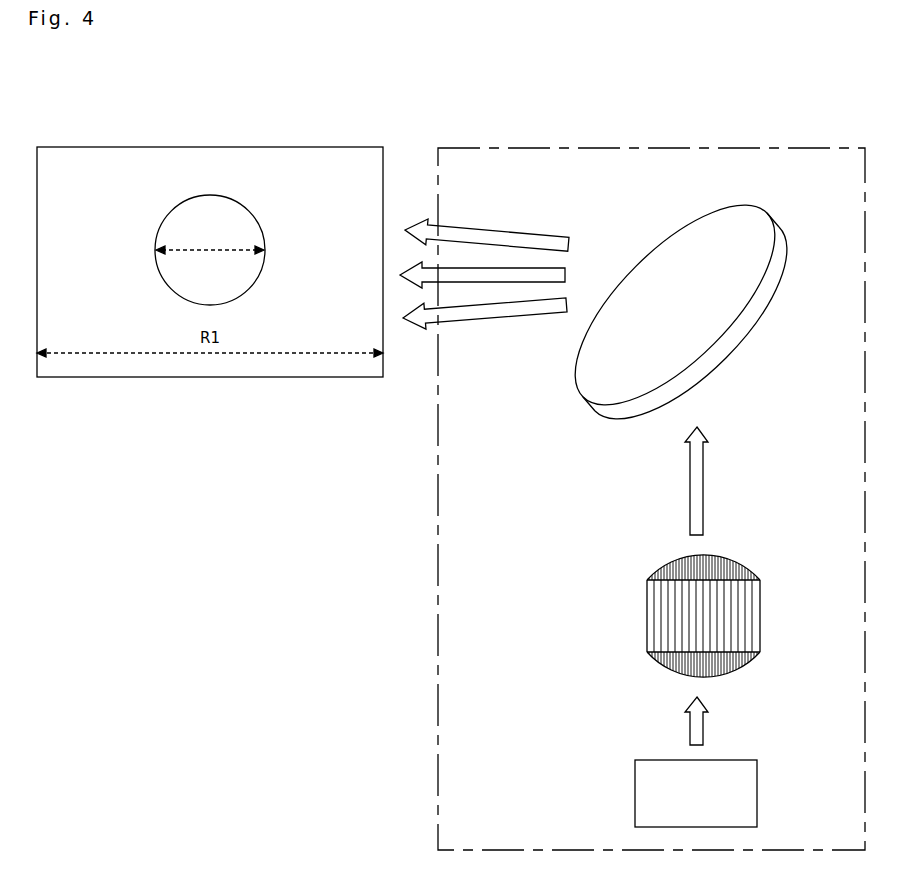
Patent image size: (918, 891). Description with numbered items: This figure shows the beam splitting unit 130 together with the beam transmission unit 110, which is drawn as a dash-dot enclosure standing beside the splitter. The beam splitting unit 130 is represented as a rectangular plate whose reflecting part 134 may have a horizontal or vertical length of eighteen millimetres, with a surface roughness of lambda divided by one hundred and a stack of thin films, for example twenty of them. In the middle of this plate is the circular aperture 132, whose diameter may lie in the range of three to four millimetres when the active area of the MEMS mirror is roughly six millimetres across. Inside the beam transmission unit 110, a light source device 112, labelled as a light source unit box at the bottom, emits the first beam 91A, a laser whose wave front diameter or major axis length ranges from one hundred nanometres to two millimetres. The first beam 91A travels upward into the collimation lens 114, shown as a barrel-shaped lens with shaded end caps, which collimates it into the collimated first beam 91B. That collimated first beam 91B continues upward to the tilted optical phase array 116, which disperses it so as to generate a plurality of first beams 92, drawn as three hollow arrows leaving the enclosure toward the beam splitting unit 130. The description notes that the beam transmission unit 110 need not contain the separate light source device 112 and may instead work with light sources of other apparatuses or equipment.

The beam splitting unit 130 is at (207, 377).
The aperture 132 is at (210, 195).
The reflecting part 134 is at (280, 180).
The beam transmission unit 110 is at (438, 480).
The first beams 92 is at (485, 267).
The optical phase array 116 is at (727, 205).
The collimated first beam 91B is at (711, 481).
The collimation lens 114 is at (647, 615).
The first beam 91A is at (711, 721).
The light source device 112 is at (635, 788).